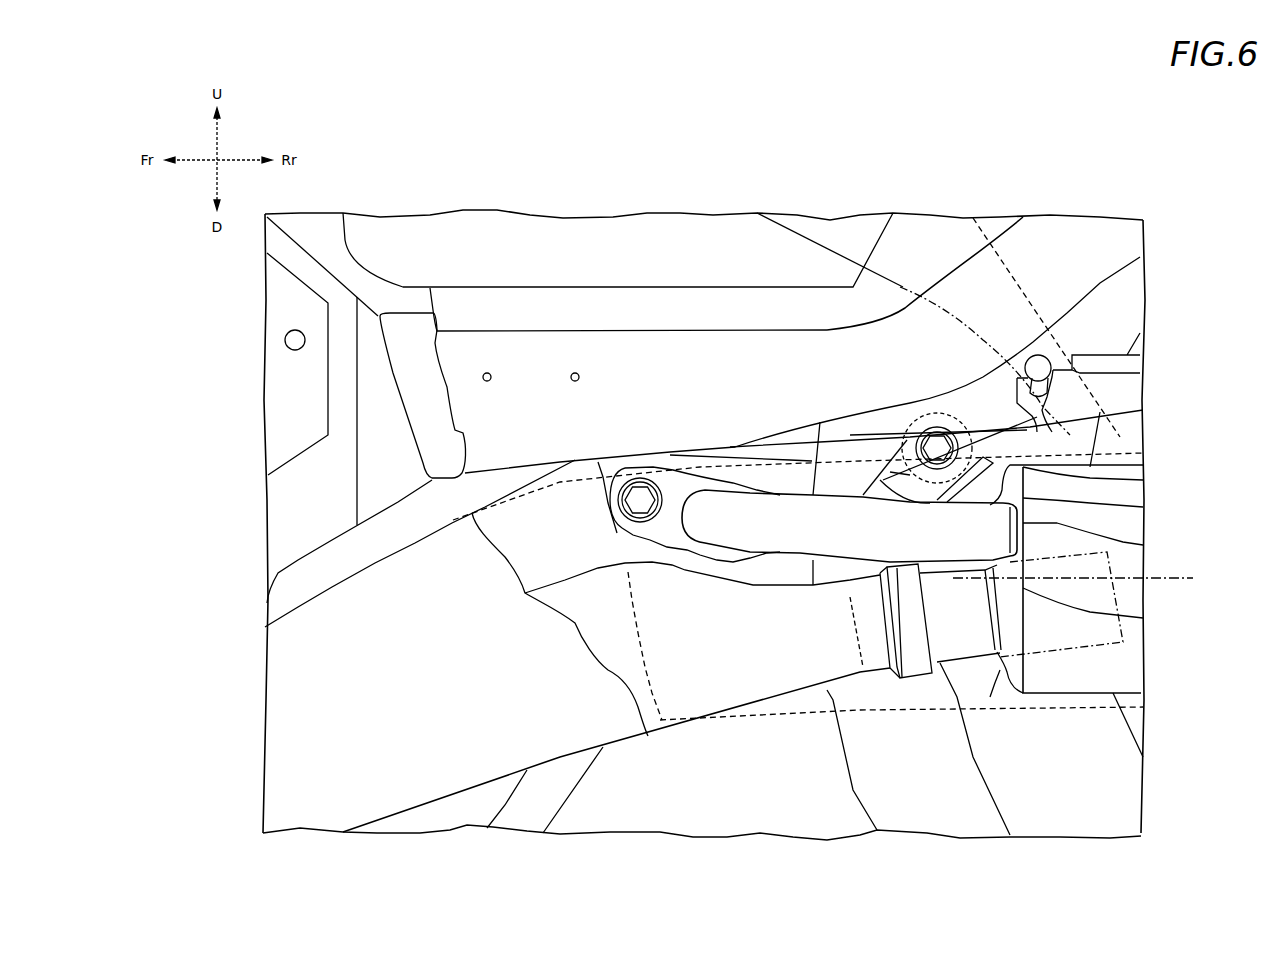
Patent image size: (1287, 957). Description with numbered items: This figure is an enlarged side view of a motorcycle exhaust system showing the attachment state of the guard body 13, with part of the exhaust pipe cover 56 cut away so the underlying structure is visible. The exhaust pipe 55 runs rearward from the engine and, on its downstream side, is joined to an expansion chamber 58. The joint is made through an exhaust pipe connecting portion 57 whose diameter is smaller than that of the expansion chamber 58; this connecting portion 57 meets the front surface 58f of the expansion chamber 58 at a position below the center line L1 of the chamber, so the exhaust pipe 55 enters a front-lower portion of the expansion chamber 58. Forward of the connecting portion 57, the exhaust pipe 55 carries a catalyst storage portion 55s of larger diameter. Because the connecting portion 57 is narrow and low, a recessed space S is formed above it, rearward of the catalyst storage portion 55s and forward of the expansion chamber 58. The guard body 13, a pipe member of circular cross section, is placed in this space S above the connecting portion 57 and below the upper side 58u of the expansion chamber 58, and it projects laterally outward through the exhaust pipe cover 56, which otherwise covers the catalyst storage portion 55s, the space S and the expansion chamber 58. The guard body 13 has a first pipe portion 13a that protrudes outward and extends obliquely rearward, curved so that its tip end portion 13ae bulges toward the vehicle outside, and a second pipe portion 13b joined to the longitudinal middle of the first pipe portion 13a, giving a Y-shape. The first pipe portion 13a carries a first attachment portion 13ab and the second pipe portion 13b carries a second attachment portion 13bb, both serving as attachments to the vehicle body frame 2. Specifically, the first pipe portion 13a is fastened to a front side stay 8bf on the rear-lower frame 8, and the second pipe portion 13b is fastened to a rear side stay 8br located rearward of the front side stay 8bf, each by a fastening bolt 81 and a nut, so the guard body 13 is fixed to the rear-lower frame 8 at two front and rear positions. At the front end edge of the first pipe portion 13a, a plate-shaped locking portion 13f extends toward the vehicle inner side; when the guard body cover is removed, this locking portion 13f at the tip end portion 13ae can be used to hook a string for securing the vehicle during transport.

The vehicle body frame 2 is at (1067, 250).
The rear-lower frame 8 is at (1070, 280).
The front side stay 8bf is at (615, 463).
The rear side stay 8br is at (1143, 480).
The guard body 13 is at (779, 553).
The first pipe portion 13a is at (708, 520).
The first attachment portion 13ab is at (680, 490).
The second pipe portion 13b is at (903, 480).
The second attachment portion 13bb is at (1143, 507).
The locking portion 13f is at (1143, 545).
The tip end portion 13ae is at (1143, 618).
The fastening bolt 81 is at (642, 500).
The exhaust pipe 55 is at (722, 681).
The catalyst storage portion 55s is at (613, 643).
The exhaust pipe cover 56 is at (533, 723).
The exhaust pipe connecting portion 57 is at (957, 638).
The expansion chamber 58 is at (1095, 667).
The upper side of expansion chamber 58u is at (1107, 465).
The front surface of expansion chamber 58f is at (992, 690).
The recessed space S is at (843, 570).
The center line of expansion chamber L1 is at (1180, 580).